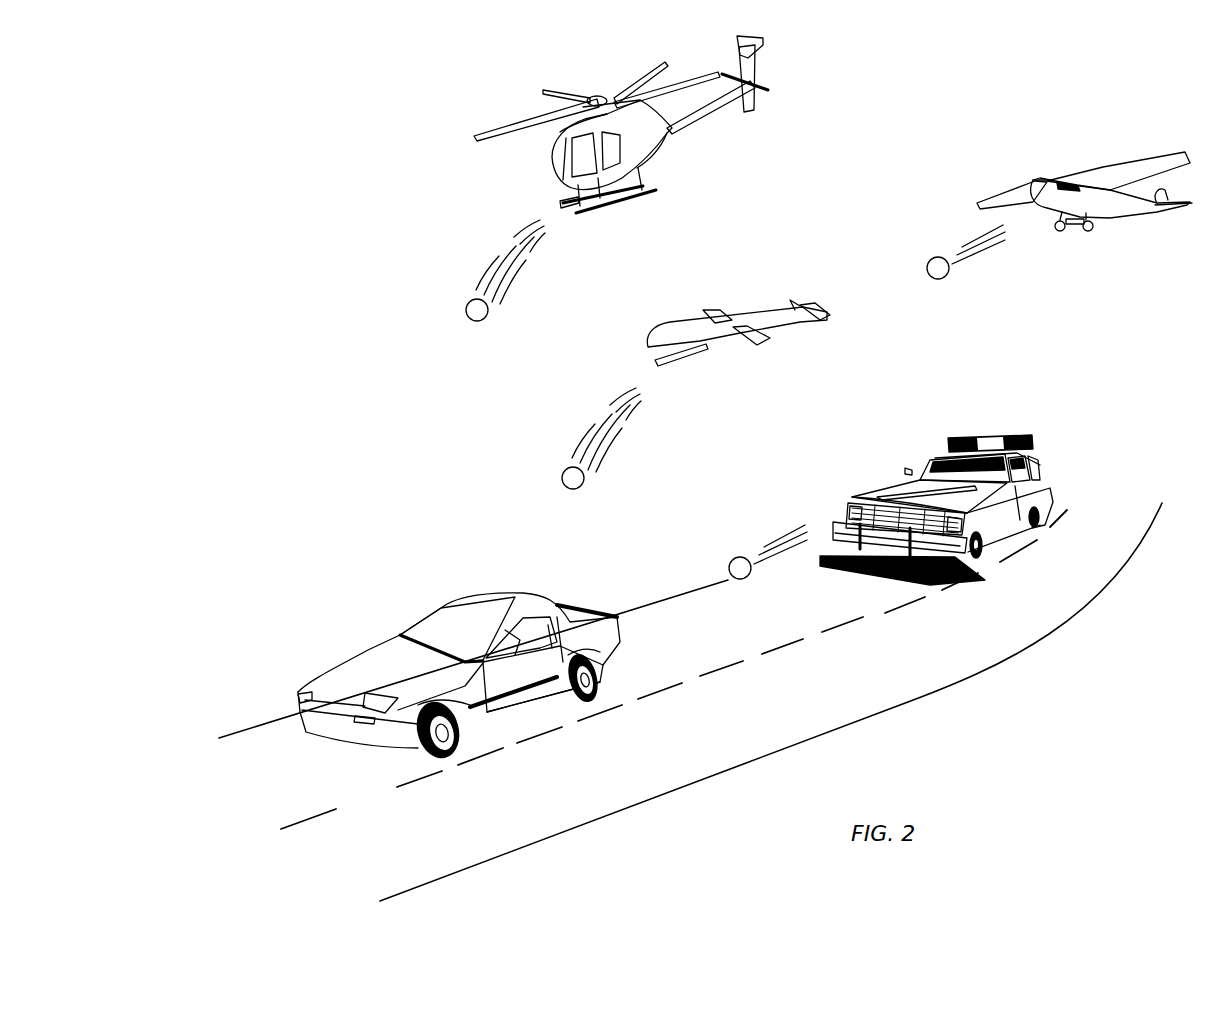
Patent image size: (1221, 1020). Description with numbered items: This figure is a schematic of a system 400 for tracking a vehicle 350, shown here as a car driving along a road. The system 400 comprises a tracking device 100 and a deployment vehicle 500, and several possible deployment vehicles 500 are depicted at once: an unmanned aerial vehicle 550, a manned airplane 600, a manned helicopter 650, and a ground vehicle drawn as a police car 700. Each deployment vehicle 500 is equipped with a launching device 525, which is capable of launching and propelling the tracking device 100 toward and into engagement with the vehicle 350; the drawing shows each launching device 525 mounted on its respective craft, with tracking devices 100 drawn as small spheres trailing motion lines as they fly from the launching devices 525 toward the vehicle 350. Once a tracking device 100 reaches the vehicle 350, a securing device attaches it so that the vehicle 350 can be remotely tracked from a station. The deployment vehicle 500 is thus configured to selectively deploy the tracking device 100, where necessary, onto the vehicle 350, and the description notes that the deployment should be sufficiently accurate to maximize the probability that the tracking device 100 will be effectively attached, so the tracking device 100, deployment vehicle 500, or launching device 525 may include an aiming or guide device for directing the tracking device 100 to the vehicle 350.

The tracking device 100 is at (477, 310).
The vehicle 350 is at (480, 600).
The system for tracking a vehicle 400 is at (367, 267).
The deployment vehicle 500 is at (815, 310).
The launching device 525 is at (565, 210).
The unmanned aerial vehicle 550 is at (770, 327).
The airplane 600 is at (1117, 205).
The helicopter 650 is at (648, 147).
The police car 700 is at (1048, 480).